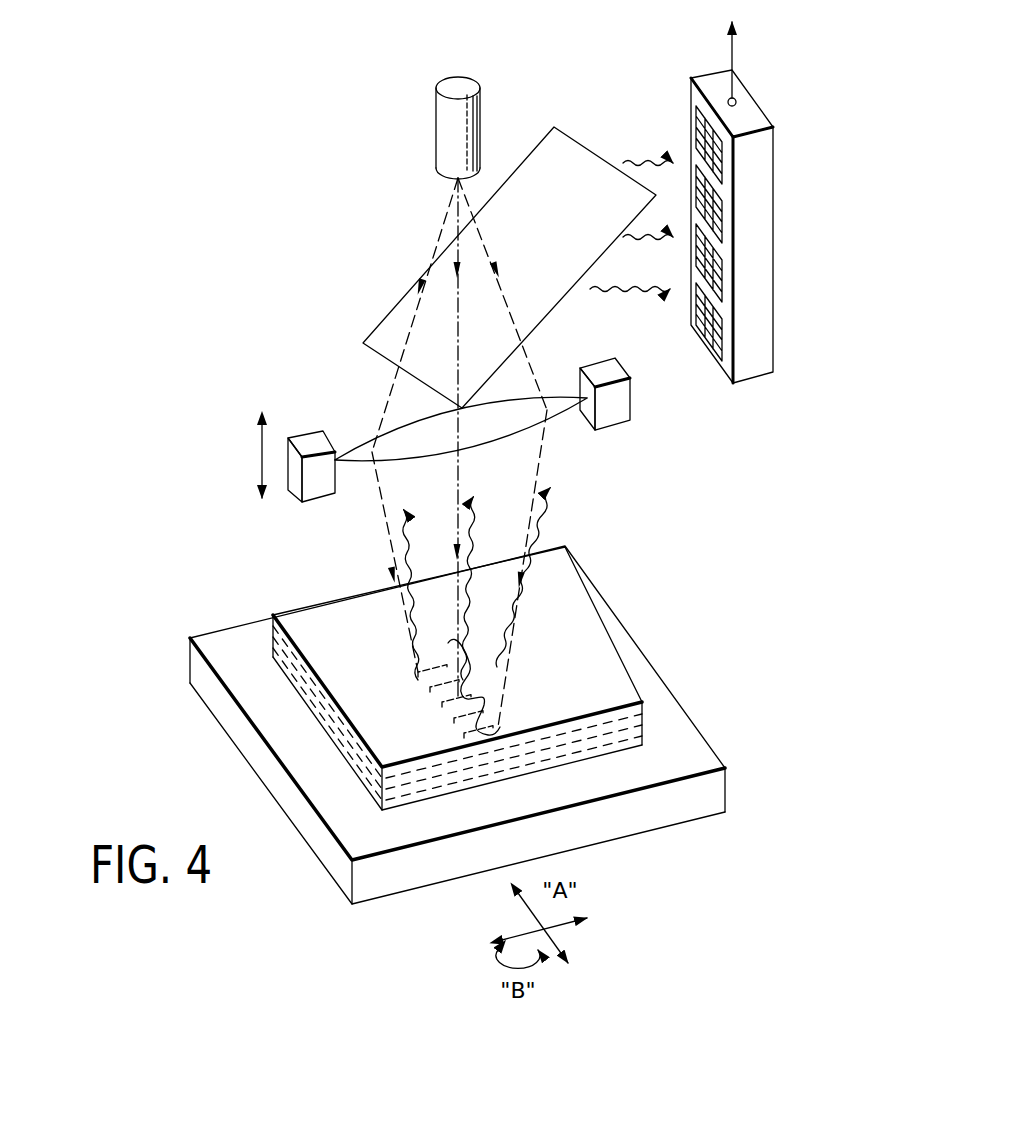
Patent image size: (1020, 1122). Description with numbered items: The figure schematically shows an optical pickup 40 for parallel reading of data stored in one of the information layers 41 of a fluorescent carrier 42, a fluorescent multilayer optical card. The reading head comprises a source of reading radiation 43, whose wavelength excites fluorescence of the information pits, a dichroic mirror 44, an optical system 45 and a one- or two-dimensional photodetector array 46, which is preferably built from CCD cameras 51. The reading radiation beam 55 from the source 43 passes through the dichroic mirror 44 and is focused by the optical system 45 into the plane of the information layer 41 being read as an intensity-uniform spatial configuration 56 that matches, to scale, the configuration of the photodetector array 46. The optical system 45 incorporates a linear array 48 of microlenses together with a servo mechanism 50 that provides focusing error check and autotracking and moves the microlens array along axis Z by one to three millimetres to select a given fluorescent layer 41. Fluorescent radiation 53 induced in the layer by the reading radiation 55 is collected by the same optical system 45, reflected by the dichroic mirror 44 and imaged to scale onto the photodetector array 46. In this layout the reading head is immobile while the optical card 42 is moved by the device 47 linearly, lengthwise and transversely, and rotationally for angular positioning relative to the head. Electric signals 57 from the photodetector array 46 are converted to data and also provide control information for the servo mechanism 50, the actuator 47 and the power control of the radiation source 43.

The optical pickup 40 is at (719, 496).
The information layer 41 is at (568, 755).
The fluorescent carrier 42 is at (586, 636).
The source of reading radiation 43 is at (442, 102).
The dichroic mirror 44 is at (563, 152).
The optical system 45 is at (314, 332).
The photodetector array 46 is at (762, 216).
The actuator 47 is at (698, 758).
The linear array of microlenses 48 is at (396, 447).
The servo mechanism 50 is at (310, 502).
The CCD cameras 51 is at (723, 262).
The fluorescent radiation 53 is at (646, 232).
The reading radiation beam 55 is at (432, 250).
The spatial configuration 56 is at (503, 678).
The electric signals 57 is at (734, 54).